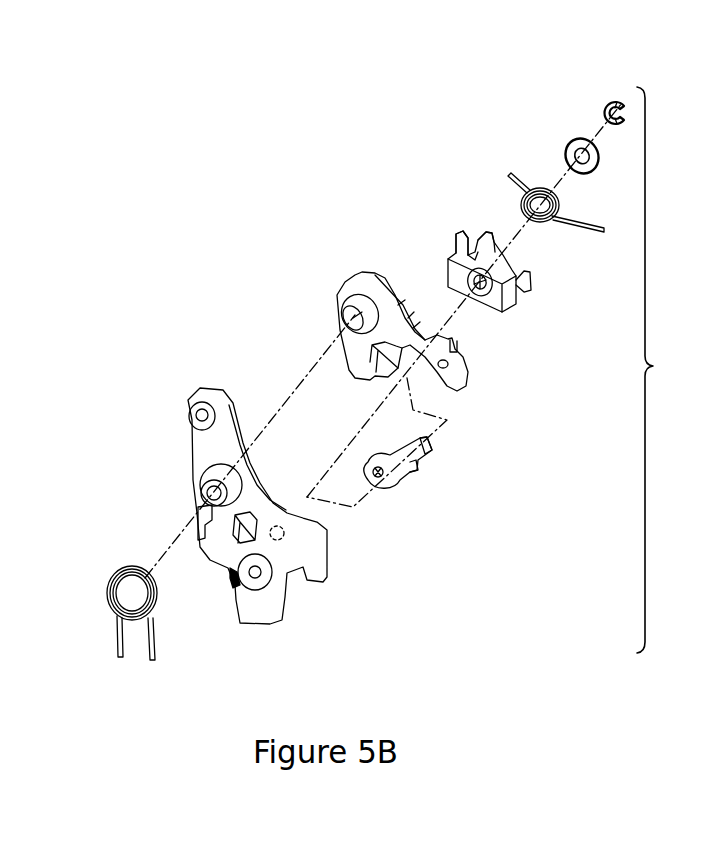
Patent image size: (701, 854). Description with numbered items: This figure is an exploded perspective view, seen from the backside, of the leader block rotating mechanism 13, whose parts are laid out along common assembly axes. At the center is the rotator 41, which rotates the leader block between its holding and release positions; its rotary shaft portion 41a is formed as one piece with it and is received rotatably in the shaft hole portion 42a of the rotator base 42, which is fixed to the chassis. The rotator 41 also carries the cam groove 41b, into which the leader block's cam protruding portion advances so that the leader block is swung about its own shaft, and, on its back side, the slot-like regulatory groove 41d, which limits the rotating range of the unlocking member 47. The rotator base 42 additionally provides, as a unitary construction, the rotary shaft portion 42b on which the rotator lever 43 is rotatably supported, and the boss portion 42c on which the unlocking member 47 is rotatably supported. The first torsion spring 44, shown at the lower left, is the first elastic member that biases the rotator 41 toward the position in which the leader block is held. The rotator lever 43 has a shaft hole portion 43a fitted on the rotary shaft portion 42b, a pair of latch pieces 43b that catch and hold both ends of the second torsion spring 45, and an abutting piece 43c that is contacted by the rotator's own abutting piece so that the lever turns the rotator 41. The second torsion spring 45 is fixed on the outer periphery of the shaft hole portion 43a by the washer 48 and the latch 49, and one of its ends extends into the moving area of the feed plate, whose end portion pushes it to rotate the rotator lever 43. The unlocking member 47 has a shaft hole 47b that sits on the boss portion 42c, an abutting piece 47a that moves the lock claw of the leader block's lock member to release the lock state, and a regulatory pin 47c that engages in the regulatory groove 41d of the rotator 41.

The leader block rotating mechanism 13 is at (660, 370).
The rotator 41 is at (368, 273).
The rotary shaft portion 41a is at (355, 303).
The cam groove 41b is at (462, 355).
The regulatory groove 41d is at (446, 372).
The rotator base 42 is at (302, 583).
The shaft hole portion 42a is at (208, 490).
The rotary shaft portion 42b is at (236, 588).
The boss portion 42c is at (287, 538).
The rotator lever 43 is at (456, 250).
The shaft hole portion 43a is at (482, 298).
The latch pieces 43b is at (465, 233).
The abutting piece 43c is at (487, 229).
The first torsion spring 44 is at (154, 650).
The second torsion spring 45 is at (512, 176).
The unlocking member 47 is at (398, 489).
The abutting piece 47a is at (432, 442).
The shaft hole 47b is at (372, 472).
The regulatory pin 47c is at (415, 466).
The washer 48 is at (576, 140).
The latch 49 is at (608, 105).